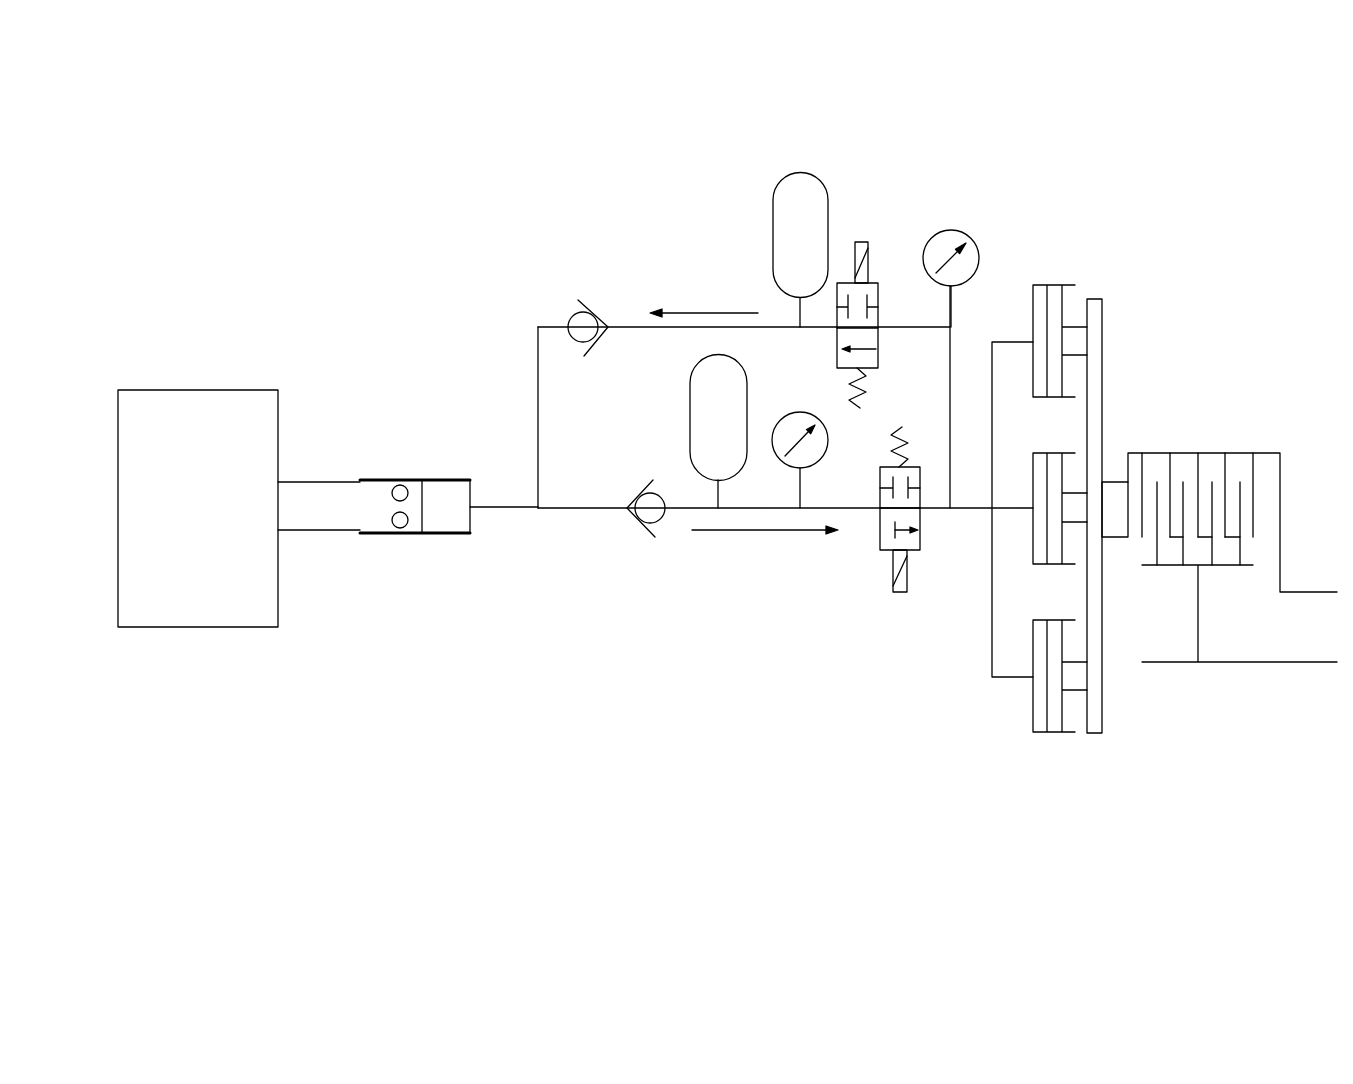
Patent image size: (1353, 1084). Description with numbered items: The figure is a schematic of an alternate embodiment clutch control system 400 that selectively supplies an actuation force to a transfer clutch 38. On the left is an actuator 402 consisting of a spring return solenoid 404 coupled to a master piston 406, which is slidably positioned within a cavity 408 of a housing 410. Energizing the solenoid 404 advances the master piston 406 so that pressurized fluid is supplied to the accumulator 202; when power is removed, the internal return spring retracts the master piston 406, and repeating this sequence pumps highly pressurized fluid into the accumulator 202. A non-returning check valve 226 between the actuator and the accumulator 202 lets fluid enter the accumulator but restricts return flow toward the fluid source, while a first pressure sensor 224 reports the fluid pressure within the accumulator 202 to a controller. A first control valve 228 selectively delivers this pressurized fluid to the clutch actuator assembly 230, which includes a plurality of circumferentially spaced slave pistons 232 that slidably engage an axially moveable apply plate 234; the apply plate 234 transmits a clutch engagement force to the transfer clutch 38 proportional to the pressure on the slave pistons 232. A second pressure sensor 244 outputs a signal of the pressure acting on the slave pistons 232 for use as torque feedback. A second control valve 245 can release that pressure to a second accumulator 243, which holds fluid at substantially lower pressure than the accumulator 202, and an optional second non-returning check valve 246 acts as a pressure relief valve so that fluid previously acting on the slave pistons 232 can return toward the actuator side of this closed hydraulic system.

The clutch control system 400 is at (362, 186).
The actuator 402 is at (432, 623).
The spring return solenoid 404 is at (160, 420).
The master piston 406 is at (333, 500).
The cavity 408 is at (445, 490).
The housing 410 is at (472, 500).
The accumulator 202 is at (702, 397).
The first pressure sensor 224 is at (794, 458).
The non-returning check valve 226 is at (638, 522).
The first control valve 228 is at (879, 538).
The clutch actuator assembly 230 is at (1095, 767).
The slave pistons 232 is at (1040, 303).
The apply plate 234 is at (1095, 322).
The transfer clutch 38 is at (1217, 440).
The second accumulator 243 is at (805, 185).
The second pressure sensor 244 is at (963, 235).
The second control valve 245 is at (873, 282).
The second non-returning check valve 246 is at (580, 325).